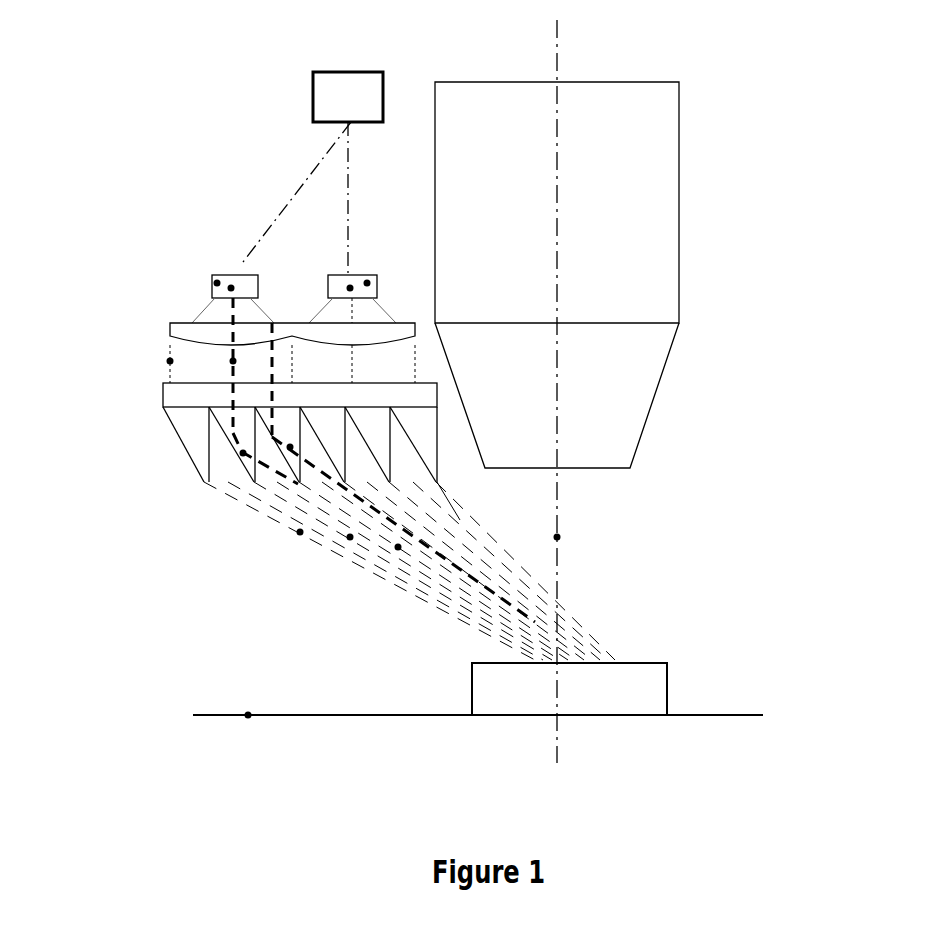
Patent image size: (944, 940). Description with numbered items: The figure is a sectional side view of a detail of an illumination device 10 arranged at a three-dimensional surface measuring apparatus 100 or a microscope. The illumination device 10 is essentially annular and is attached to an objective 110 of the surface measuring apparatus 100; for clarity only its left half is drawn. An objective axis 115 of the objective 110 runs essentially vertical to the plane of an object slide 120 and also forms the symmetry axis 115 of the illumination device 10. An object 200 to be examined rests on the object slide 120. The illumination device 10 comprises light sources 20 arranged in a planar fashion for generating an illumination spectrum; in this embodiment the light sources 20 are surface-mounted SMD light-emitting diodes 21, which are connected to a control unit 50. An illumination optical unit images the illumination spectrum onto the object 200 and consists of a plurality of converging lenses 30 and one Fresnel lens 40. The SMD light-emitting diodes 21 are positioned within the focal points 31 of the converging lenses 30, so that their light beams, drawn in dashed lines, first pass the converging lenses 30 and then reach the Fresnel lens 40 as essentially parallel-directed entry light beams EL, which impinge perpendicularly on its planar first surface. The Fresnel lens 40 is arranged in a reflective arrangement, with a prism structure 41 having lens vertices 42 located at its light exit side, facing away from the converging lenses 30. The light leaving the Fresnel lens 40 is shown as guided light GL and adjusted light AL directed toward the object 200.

The illumination device 10 is at (180, 138).
The light sources 20 is at (341, 269).
The SMD light-emitting diodes 21 is at (217, 283).
The focal points 31 is at (231, 288).
The converging lenses 30 is at (166, 332).
The entry light beams EL is at (233, 361).
The Fresnel lens 40 is at (160, 435).
The prism structure 41 is at (197, 478).
The lens vertices 42 is at (436, 488).
The guided light GL is at (290, 447).
The adjusted light / output light AL is at (398, 547).
The control unit 50 is at (362, 114).
The 3D surface measuring apparatus 100 is at (687, 468).
The objective 110 is at (620, 411).
The objective axis 115 is at (557, 537).
The object slide 120 is at (248, 715).
The object 200 is at (620, 705).